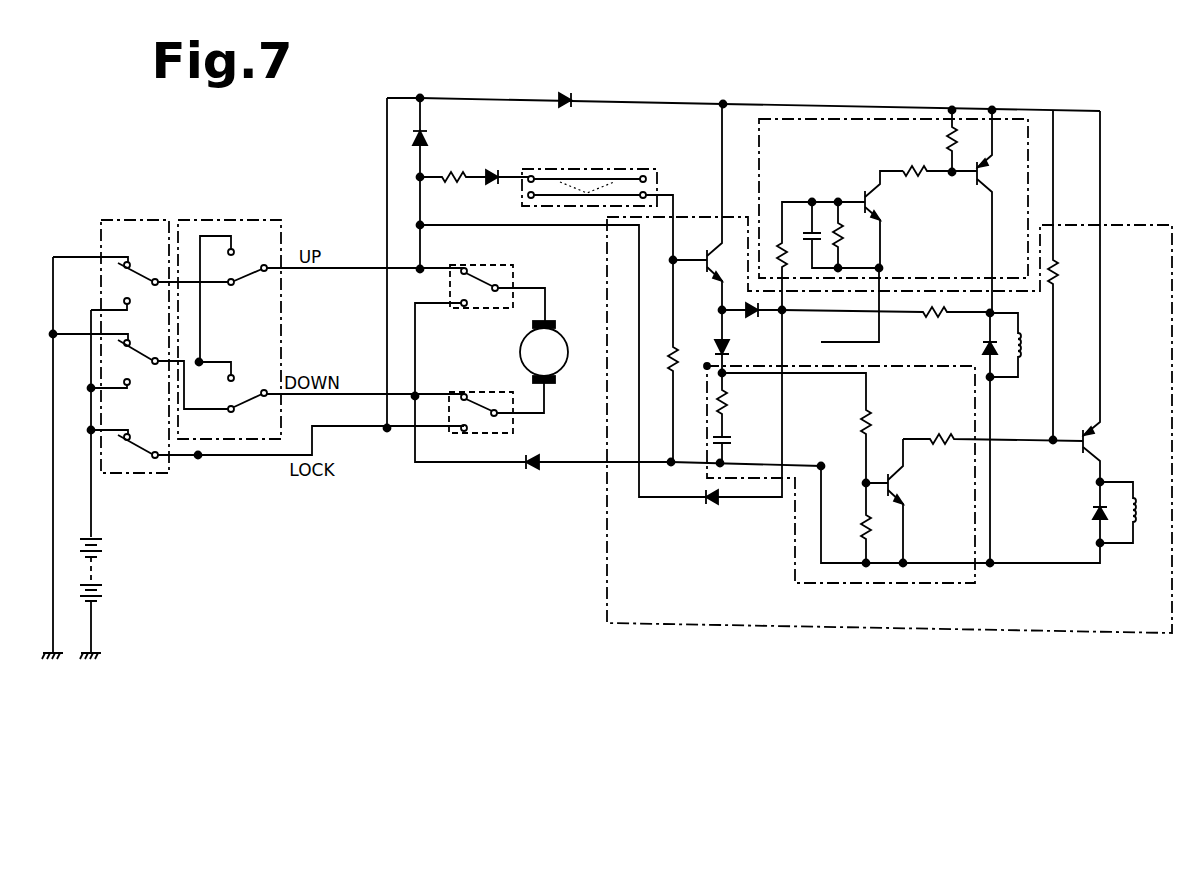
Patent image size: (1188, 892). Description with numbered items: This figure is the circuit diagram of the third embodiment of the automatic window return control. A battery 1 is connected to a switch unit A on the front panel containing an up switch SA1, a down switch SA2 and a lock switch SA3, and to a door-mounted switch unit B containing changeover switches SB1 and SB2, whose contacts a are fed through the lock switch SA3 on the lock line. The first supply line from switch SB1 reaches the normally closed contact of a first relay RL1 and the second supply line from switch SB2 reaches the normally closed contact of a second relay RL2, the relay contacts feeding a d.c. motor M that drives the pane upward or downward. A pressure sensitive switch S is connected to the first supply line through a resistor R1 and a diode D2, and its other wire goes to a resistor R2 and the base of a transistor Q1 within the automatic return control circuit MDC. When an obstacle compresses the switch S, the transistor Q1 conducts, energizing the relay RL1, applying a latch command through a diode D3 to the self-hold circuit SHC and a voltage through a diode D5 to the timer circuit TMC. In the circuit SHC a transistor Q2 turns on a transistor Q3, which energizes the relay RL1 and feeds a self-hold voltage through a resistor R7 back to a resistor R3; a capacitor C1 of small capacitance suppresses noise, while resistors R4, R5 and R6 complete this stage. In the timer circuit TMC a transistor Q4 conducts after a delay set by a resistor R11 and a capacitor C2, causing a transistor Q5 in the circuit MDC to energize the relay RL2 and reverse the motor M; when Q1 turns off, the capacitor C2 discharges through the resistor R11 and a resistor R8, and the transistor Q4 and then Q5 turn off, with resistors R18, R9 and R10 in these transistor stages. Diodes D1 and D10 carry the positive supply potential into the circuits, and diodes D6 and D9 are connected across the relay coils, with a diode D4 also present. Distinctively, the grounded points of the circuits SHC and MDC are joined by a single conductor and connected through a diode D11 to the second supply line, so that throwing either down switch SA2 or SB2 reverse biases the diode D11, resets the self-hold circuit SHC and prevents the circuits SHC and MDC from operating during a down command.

The switch unit A is at (160, 220).
The switch unit B is at (275, 220).
The battery 1 is at (103, 550).
The up switch SA1 is at (114, 290).
The down switch SA2 is at (114, 359).
The lock switch SA3 is at (130, 446).
The up switch SB1 is at (255, 298).
The down switch SB2 is at (262, 430).
The first relay RL1 is at (733, 354).
The second relay RL2 is at (790, 460).
The d.c. motor M is at (532, 367).
The pressure sensitive switch S is at (628, 180).
The diode D1 is at (566, 113).
The diode D2 is at (505, 188).
The diode D3 is at (752, 298).
The diode D4 is at (744, 418).
The diode D5 is at (735, 343).
The diode D6 is at (976, 440).
The diode D9 is at (1084, 514).
The diode D10 is at (437, 140).
The diode D11 is at (597, 476).
The resistor R1 is at (453, 189).
The resistor R2 is at (686, 363).
The resistor R3 is at (810, 256).
The resistor R4 is at (847, 235).
The resistor R5 is at (940, 183).
The resistor R6 is at (963, 143).
The resistor R7 is at (888, 323).
The resistor R8 is at (878, 525).
The resistor R9 is at (993, 452).
The resistor R10 is at (1073, 277).
The resistor R11 is at (741, 405).
The resistor R18 is at (812, 430).
The capacitor C1 is at (841, 234).
The capacitor C2 is at (735, 451).
The transistor Q1 is at (709, 207).
The transistor Q2 is at (888, 221).
The transistor Q3 is at (999, 211).
The transistor Q4 is at (899, 503).
The transistor Q5 is at (1105, 298).
The self-hold circuit SHC is at (758, 141).
The automatic return control circuit MDC is at (612, 260).
The timer circuit TMC is at (977, 505).